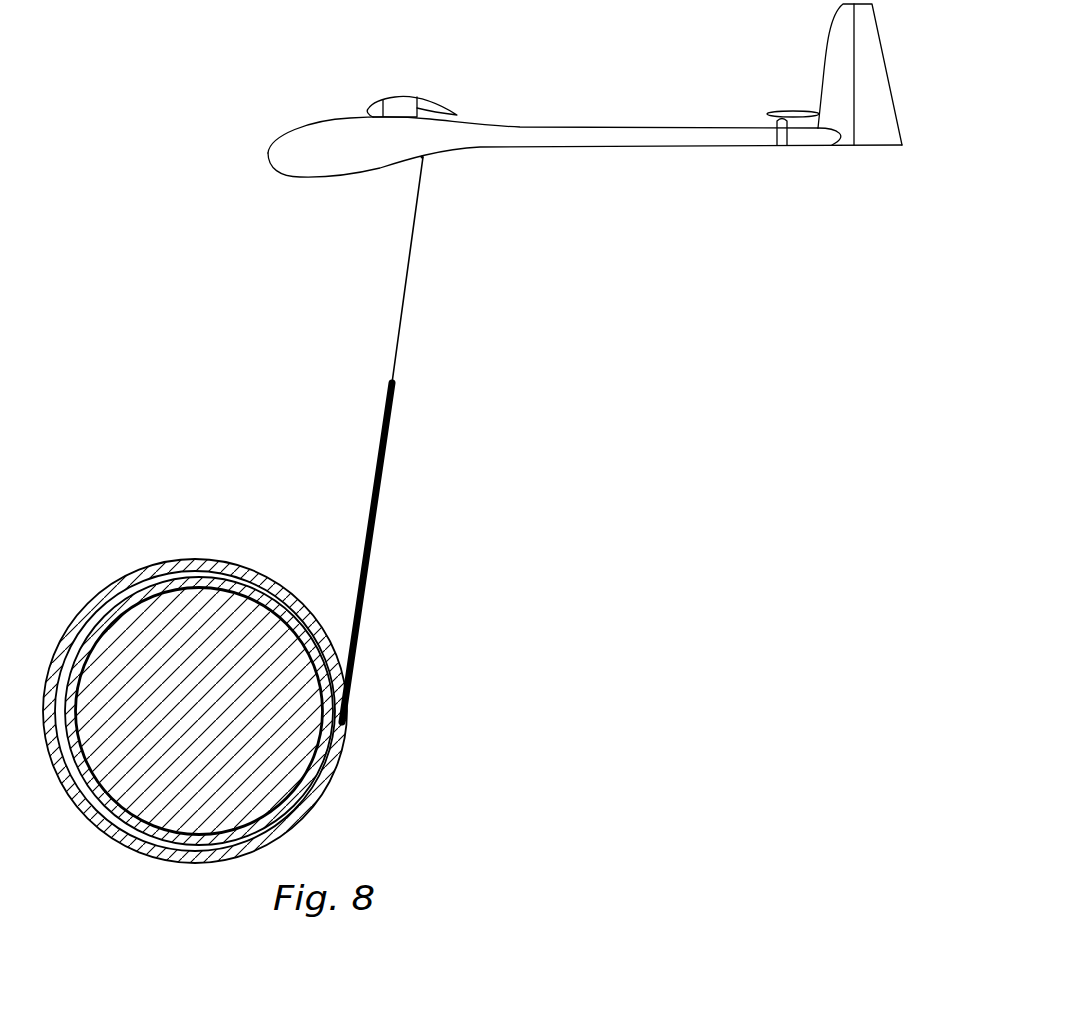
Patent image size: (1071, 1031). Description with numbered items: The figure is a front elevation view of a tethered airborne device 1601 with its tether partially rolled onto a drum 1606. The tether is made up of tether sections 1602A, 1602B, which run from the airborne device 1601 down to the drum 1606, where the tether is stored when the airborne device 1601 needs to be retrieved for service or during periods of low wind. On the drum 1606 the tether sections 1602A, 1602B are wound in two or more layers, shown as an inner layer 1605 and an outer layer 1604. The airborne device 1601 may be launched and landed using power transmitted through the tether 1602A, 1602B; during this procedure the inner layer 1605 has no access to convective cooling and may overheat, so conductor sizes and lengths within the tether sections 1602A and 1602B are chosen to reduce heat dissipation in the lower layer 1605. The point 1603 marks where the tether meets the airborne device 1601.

The airborne device 1601 is at (483, 125).
The tether section 1602A is at (382, 440).
The tether section 1602B is at (400, 305).
The tether attachment point 1603 is at (422, 157).
The outer layer 1604 is at (135, 578).
The inner layer 1605 is at (169, 582).
The drum 1606 is at (228, 640).